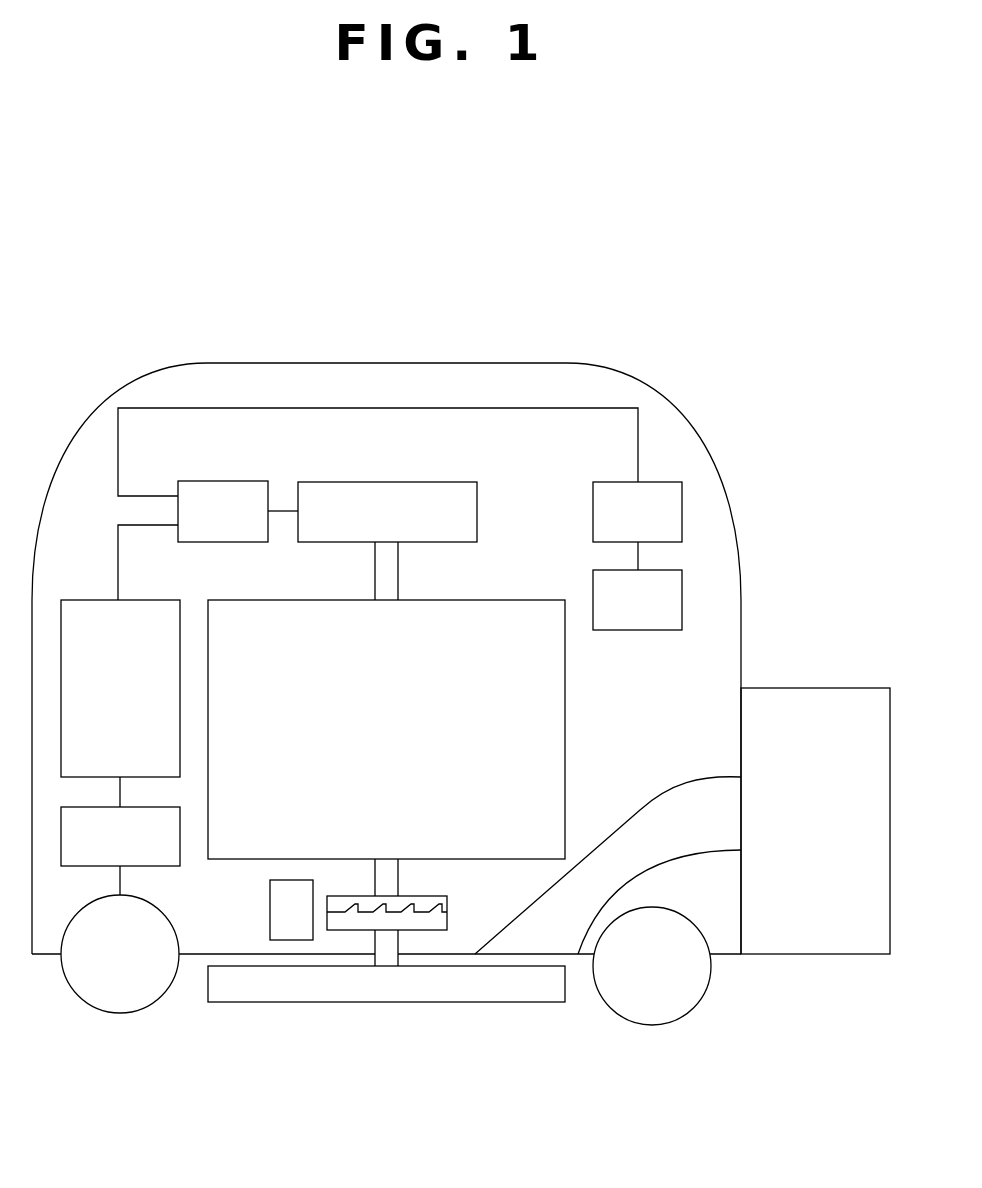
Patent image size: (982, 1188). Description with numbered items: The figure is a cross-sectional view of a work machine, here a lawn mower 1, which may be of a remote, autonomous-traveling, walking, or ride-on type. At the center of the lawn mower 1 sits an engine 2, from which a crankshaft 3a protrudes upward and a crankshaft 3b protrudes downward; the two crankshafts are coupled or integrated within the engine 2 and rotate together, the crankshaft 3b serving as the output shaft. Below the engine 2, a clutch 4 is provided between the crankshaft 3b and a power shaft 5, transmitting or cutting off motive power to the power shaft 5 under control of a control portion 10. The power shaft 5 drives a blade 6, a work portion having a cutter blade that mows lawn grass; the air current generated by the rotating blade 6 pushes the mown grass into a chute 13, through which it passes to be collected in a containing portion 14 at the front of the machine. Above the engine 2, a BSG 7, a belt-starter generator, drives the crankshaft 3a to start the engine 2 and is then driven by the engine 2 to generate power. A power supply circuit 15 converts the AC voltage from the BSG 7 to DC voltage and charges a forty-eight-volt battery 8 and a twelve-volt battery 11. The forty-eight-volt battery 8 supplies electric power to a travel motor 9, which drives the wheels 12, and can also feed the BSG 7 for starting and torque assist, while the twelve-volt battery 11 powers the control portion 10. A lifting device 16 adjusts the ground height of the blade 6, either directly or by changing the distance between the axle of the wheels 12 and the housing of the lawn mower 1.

The lawn mower 1 is at (522, 362).
The engine 2 is at (565, 758).
The crankshaft 3a is at (398, 563).
The crankshaft 3b is at (398, 872).
The clutch 4 is at (447, 905).
The power shaft 5 is at (398, 945).
The blade 6 is at (470, 1002).
The BSG 7 is at (370, 482).
The 48-V battery 8 is at (150, 600).
The travel motor 9 is at (97, 866).
The control portion 10 is at (680, 570).
The 12-V battery 11 is at (648, 482).
The wheels 12 is at (70, 985).
The chute 13 is at (657, 800).
The containing portion 14 is at (800, 688).
The power supply circuit 15 is at (198, 481).
The lifting device 16 is at (270, 908).